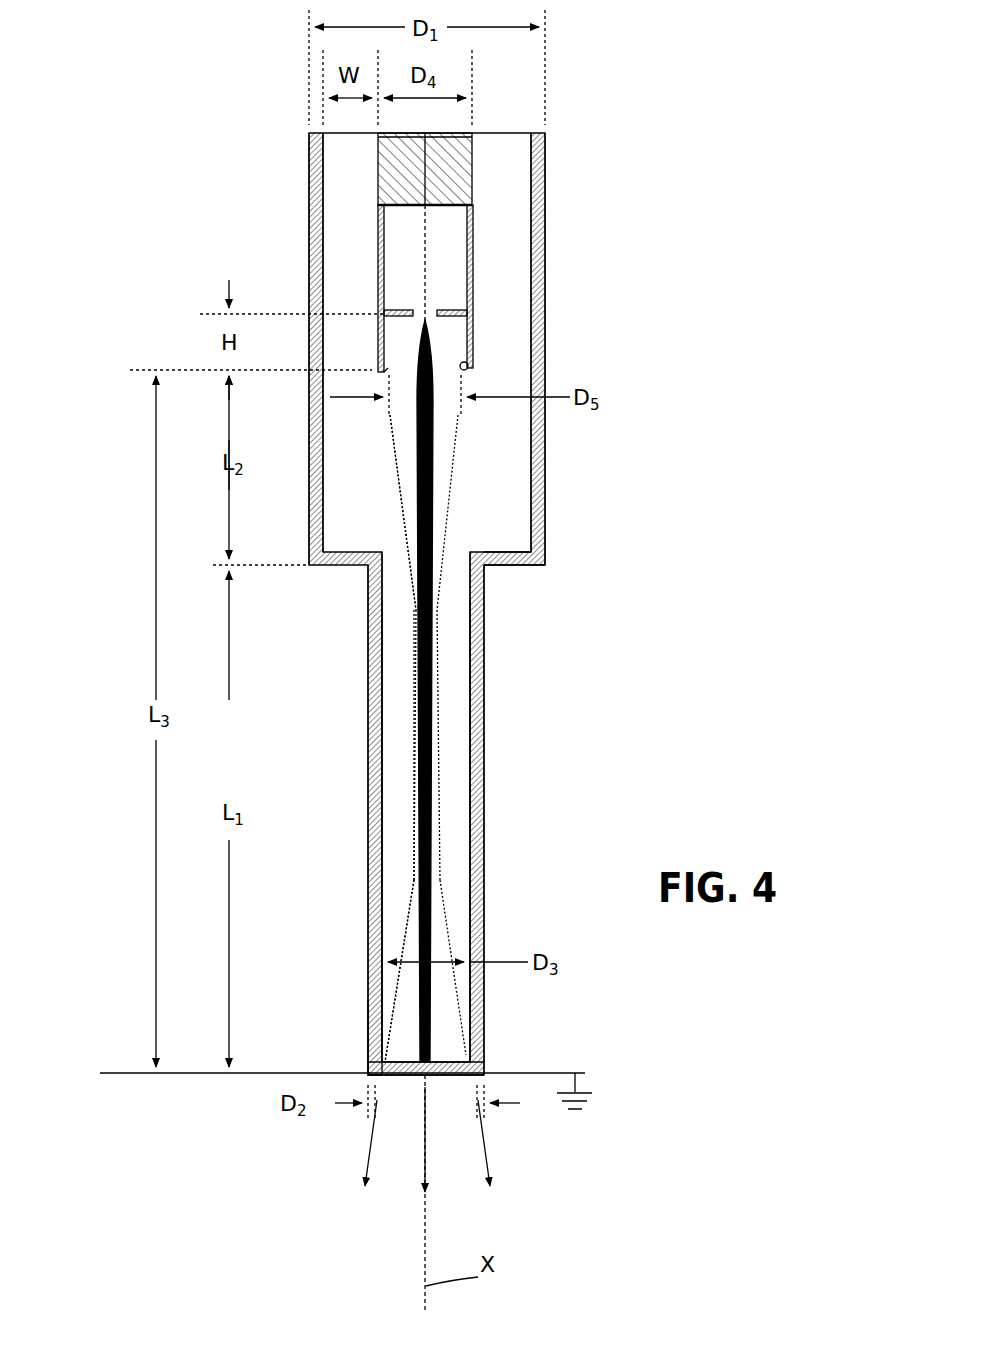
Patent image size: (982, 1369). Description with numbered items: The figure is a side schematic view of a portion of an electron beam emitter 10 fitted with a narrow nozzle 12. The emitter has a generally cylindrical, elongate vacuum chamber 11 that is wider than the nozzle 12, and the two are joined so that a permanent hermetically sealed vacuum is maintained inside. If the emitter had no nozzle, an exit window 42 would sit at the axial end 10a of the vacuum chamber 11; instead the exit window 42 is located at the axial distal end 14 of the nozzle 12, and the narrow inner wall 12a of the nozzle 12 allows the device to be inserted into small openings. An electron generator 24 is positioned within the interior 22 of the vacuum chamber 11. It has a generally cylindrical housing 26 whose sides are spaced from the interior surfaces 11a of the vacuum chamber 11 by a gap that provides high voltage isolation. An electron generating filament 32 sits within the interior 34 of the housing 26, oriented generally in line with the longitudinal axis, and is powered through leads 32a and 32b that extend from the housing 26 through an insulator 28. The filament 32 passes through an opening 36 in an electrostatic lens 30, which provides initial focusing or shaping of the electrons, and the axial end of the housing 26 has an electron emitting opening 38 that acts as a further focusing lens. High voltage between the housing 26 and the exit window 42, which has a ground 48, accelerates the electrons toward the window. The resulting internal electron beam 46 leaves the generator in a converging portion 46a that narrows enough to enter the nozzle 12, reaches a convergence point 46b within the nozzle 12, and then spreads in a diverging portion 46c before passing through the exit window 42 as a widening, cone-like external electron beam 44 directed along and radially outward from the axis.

The electron beam emitter 10 is at (547, 191).
The axial end of the vacuum chamber 10a is at (513, 567).
The vacuum chamber 11 is at (547, 301).
The interior surfaces of the vacuum chamber 11a is at (318, 186).
The nozzle 12 is at (484, 812).
The inner wall of the nozzle 12a is at (450, 750).
The axial distal end of the nozzle 14 is at (370, 1033).
The interior of the vacuum chamber 22 is at (495, 441).
The electron generator 24 is at (508, 166).
The housing 26 is at (378, 256).
The insulator 28 is at (378, 160).
The electrostatic lens 30 is at (395, 308).
The electron generating filament 32 is at (424, 289).
The lead 32a is at (425, 254).
The lead 32b is at (425, 263).
The interior of the housing 34 is at (455, 229).
The opening in the electrostatic lens 36 is at (452, 300).
The electron emitting opening 38 is at (470, 362).
The exit window 42 is at (480, 1024).
The electron beam 44 is at (428, 1146).
The internal electron beam 46 is at (433, 921).
The converging portion 46a is at (412, 477).
The convergence point 46b is at (418, 728).
The diverging portion 46c is at (403, 998).
The ground 48 is at (563, 1068).